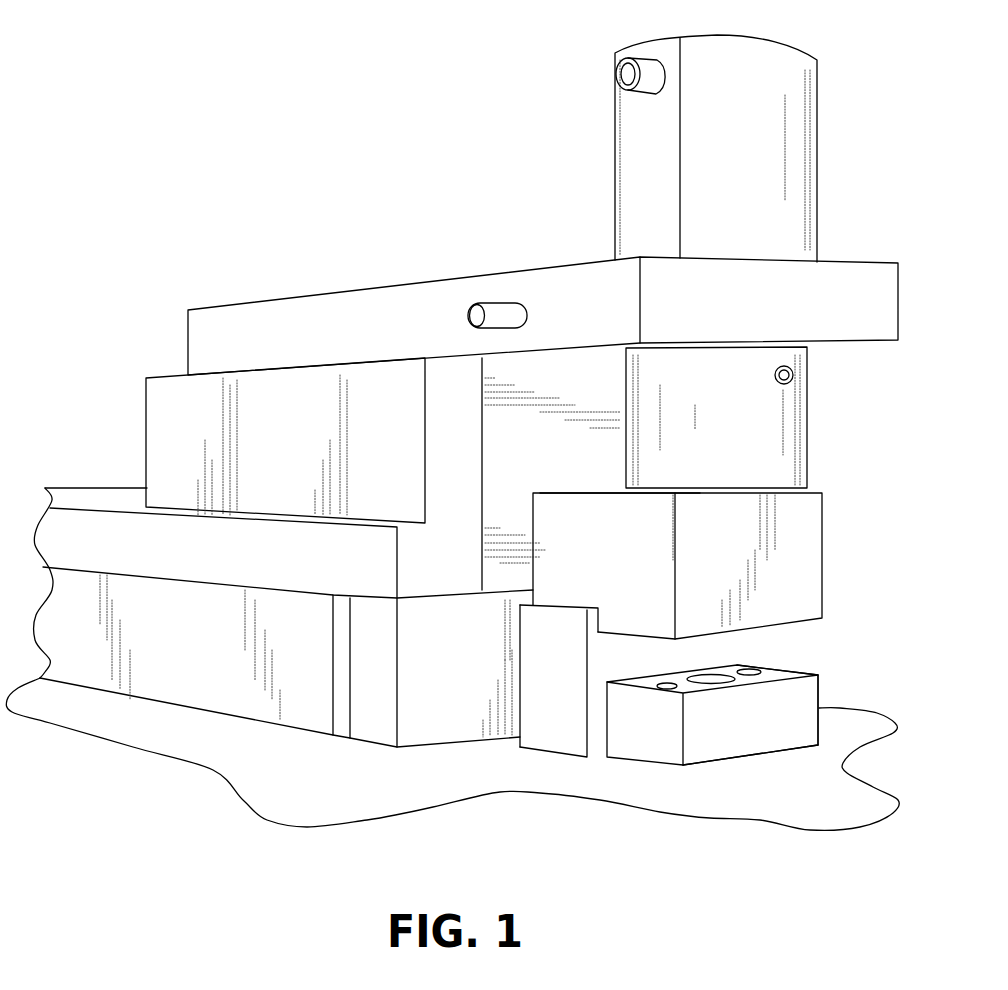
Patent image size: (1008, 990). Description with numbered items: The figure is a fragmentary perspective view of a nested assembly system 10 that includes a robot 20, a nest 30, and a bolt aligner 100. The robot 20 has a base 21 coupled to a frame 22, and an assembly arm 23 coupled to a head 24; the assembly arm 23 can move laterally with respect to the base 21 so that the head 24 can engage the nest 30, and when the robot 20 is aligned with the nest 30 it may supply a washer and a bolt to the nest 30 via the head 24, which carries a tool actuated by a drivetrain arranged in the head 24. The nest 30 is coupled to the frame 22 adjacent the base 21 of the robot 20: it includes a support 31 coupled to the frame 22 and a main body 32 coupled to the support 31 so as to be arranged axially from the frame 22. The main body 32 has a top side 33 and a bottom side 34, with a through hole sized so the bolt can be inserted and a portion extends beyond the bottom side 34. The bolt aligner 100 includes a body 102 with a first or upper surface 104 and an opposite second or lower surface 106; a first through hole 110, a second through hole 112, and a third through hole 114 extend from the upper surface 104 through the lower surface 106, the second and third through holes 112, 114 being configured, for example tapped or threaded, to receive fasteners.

The nested assembly system 10 is at (250, 87).
The robot 20 is at (820, 445).
The base 21 is at (182, 667).
The frame 22 is at (297, 788).
The assembly arm 23 is at (330, 282).
The head 24 is at (743, 427).
The nest 30 is at (832, 537).
The support 31 is at (520, 687).
The main body 32 is at (557, 577).
The top side 33 is at (578, 487).
The bottom side 34 is at (617, 650).
The bolt aligner 100 is at (823, 698).
The body 102 is at (627, 740).
The upper surface 104 is at (790, 671).
The lower surface 106 is at (765, 755).
The first through hole 110 is at (713, 670).
The second through hole 112 is at (668, 690).
The third through hole 114 is at (753, 672).